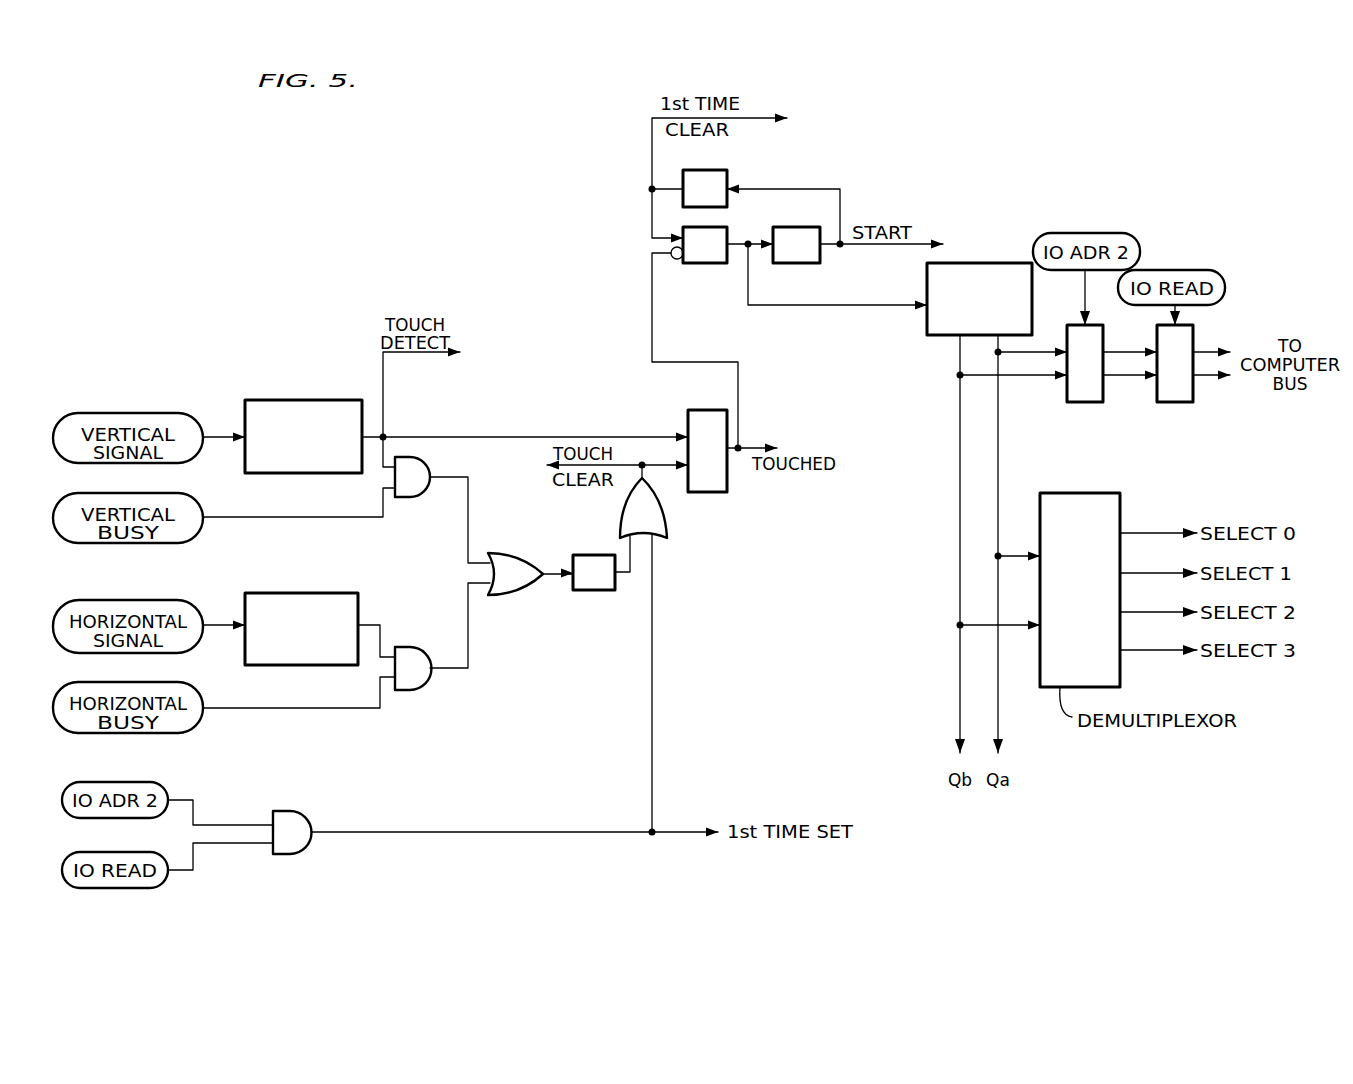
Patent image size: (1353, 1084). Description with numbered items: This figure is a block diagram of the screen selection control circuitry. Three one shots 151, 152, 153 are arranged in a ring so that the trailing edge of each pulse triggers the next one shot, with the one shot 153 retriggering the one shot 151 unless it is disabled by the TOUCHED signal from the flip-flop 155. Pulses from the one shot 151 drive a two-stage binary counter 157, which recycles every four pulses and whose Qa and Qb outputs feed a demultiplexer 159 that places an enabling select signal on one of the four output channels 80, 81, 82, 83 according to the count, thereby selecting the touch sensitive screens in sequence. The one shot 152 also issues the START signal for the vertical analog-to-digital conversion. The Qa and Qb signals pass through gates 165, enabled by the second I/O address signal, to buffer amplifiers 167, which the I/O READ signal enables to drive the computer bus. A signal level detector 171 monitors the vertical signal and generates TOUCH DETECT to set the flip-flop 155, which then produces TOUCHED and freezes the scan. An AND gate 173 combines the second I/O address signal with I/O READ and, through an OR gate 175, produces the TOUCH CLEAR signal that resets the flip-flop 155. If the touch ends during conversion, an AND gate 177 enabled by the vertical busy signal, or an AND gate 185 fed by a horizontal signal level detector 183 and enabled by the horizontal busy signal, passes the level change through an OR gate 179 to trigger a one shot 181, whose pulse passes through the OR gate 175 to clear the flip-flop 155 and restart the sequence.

The one shot 151 is at (728, 232).
The one shot 152 is at (790, 227).
The one shot 153 is at (728, 176).
The flip-flop 155 is at (712, 410).
The two-stage binary counter 157 is at (926, 338).
The demultiplexer 159 is at (1065, 492).
The gates 165 is at (1094, 402).
The buffer amplifiers 167 is at (1184, 402).
The signal level detector 171 is at (280, 400).
The AND gate 173 is at (303, 850).
The OR gate 175 is at (668, 510).
The AND gate 177 is at (430, 470).
The OR gate 179 is at (505, 558).
The one shot 181 is at (591, 592).
The signal level detector 183 is at (343, 593).
The AND gate 185 is at (408, 648).
The output channel 80 is at (1160, 530).
The output channel 81 is at (1155, 570).
The output channel 82 is at (1160, 609).
The output channel 83 is at (1160, 648).